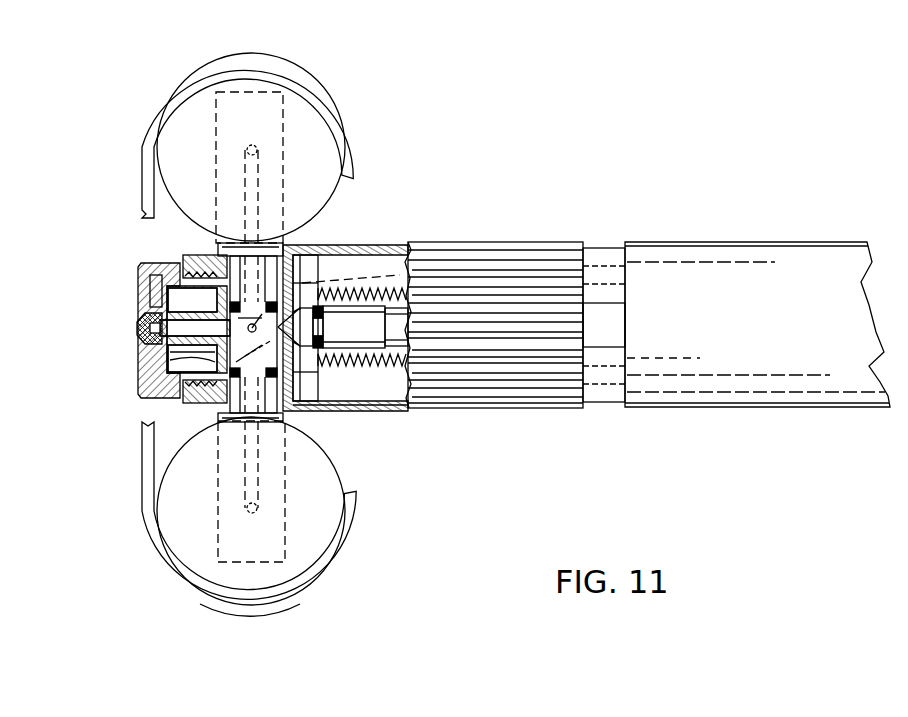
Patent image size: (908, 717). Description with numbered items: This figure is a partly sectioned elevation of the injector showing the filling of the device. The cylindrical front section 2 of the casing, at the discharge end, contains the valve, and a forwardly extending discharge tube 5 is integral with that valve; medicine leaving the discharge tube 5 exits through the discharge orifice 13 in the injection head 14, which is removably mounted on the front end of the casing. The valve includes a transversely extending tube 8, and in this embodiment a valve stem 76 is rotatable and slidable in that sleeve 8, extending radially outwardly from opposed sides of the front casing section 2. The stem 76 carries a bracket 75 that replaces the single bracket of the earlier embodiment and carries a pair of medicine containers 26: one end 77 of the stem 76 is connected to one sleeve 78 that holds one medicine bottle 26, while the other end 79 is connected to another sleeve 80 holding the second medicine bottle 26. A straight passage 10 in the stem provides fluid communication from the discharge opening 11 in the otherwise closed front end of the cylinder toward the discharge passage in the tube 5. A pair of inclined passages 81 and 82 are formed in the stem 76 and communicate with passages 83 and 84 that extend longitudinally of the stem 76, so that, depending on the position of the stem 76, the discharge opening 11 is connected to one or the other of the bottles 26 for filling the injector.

The front section 2 is at (488, 248).
The discharge tube 5 is at (167, 295).
The transversely extending tube 8 is at (200, 358).
The straight passage 10 is at (185, 258).
The discharge opening 11 is at (303, 326).
The discharge orifice 13 is at (137, 325).
The injection head 14 is at (143, 262).
The medicine container 26 is at (325, 123).
The bracket 75 is at (330, 575).
The valve stem 76 is at (297, 275).
The one end 77 is at (280, 115).
The sleeve 78 is at (350, 157).
The other end 79 is at (237, 547).
The sleeve 80 is at (255, 607).
The inclined passage 81 is at (330, 281).
The inclined passage 82 is at (320, 410).
The longitudinal passage 83 is at (257, 218).
The longitudinal passage 84 is at (248, 452).